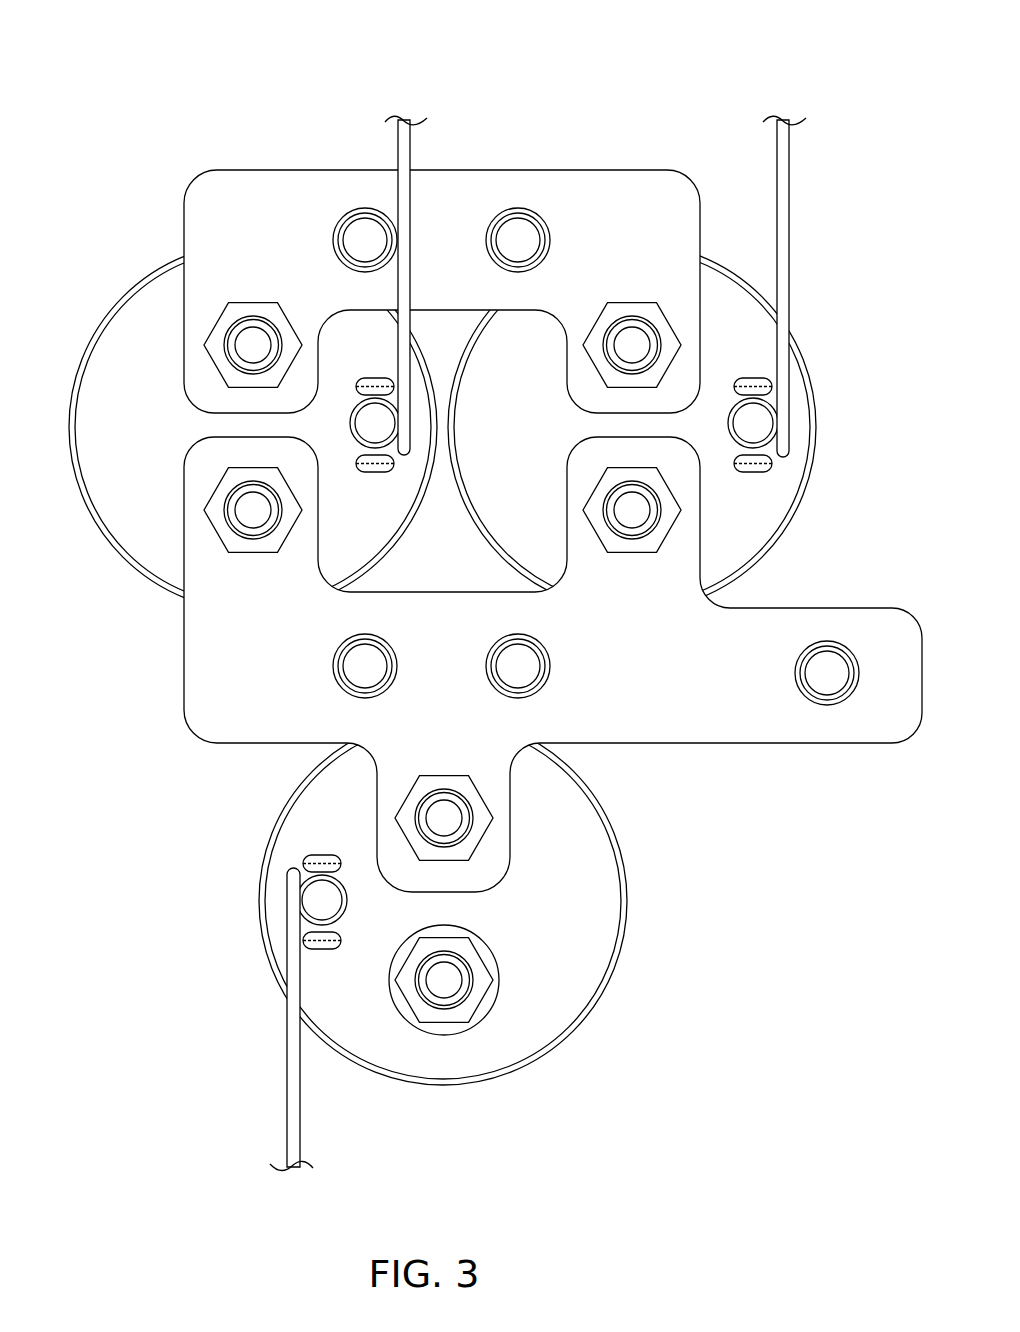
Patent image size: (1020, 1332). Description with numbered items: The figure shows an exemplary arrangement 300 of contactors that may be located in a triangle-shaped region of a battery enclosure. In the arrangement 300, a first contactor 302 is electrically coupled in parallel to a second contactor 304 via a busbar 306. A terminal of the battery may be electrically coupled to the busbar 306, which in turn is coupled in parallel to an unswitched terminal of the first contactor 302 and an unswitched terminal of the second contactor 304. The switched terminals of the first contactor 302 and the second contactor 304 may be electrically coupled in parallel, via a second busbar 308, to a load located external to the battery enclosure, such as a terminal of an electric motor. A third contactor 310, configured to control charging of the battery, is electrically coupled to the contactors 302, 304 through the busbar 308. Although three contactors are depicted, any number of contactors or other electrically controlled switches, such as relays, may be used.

The arrangement 300 is at (396, 21).
The first contactor 302 is at (147, 352).
The second contactor 304 is at (740, 523).
The busbar 306 is at (222, 208).
The busbar 308 is at (213, 702).
The charging contactor 310 is at (578, 900).